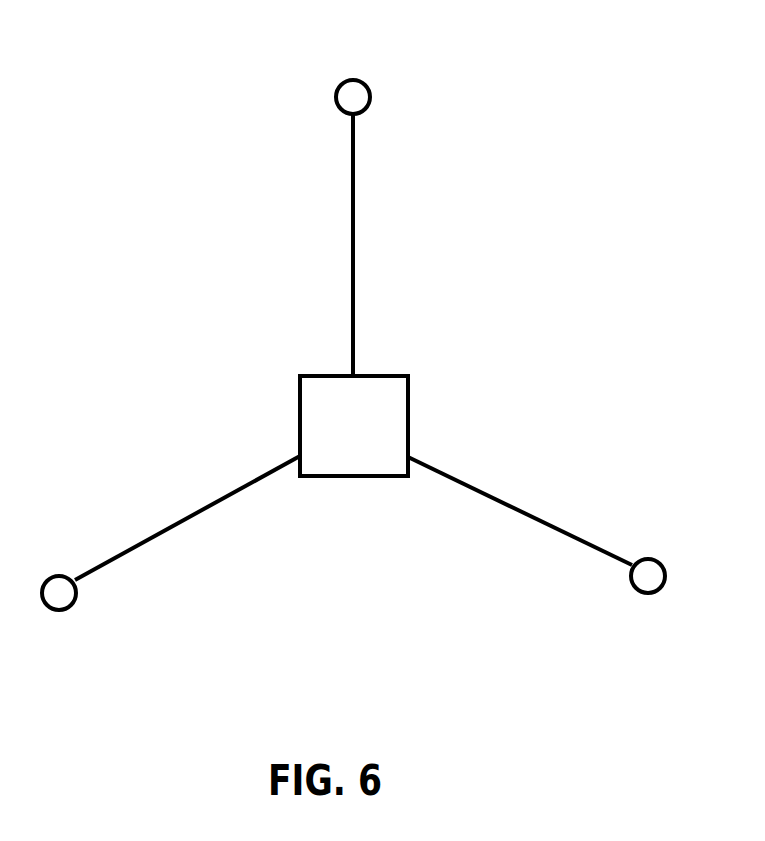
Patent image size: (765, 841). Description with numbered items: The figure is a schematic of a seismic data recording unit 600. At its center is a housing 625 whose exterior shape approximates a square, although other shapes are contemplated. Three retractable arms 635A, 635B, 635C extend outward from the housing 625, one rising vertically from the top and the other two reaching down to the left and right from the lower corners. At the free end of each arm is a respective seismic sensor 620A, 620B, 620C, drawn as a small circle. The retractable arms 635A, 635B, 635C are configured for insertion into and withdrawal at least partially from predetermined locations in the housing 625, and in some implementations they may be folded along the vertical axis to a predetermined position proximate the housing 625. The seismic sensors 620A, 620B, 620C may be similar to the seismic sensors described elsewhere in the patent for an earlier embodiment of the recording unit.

The seismic data recording unit 600 is at (153, 39).
The housing 625 is at (328, 375).
The seismic sensor 620A is at (65, 608).
The seismic sensor 620B is at (643, 593).
The seismic sensor 620C is at (360, 80).
The retractable arm 635A is at (182, 520).
The retractable arm 635B is at (515, 503).
The retractable arm 635C is at (353, 265).